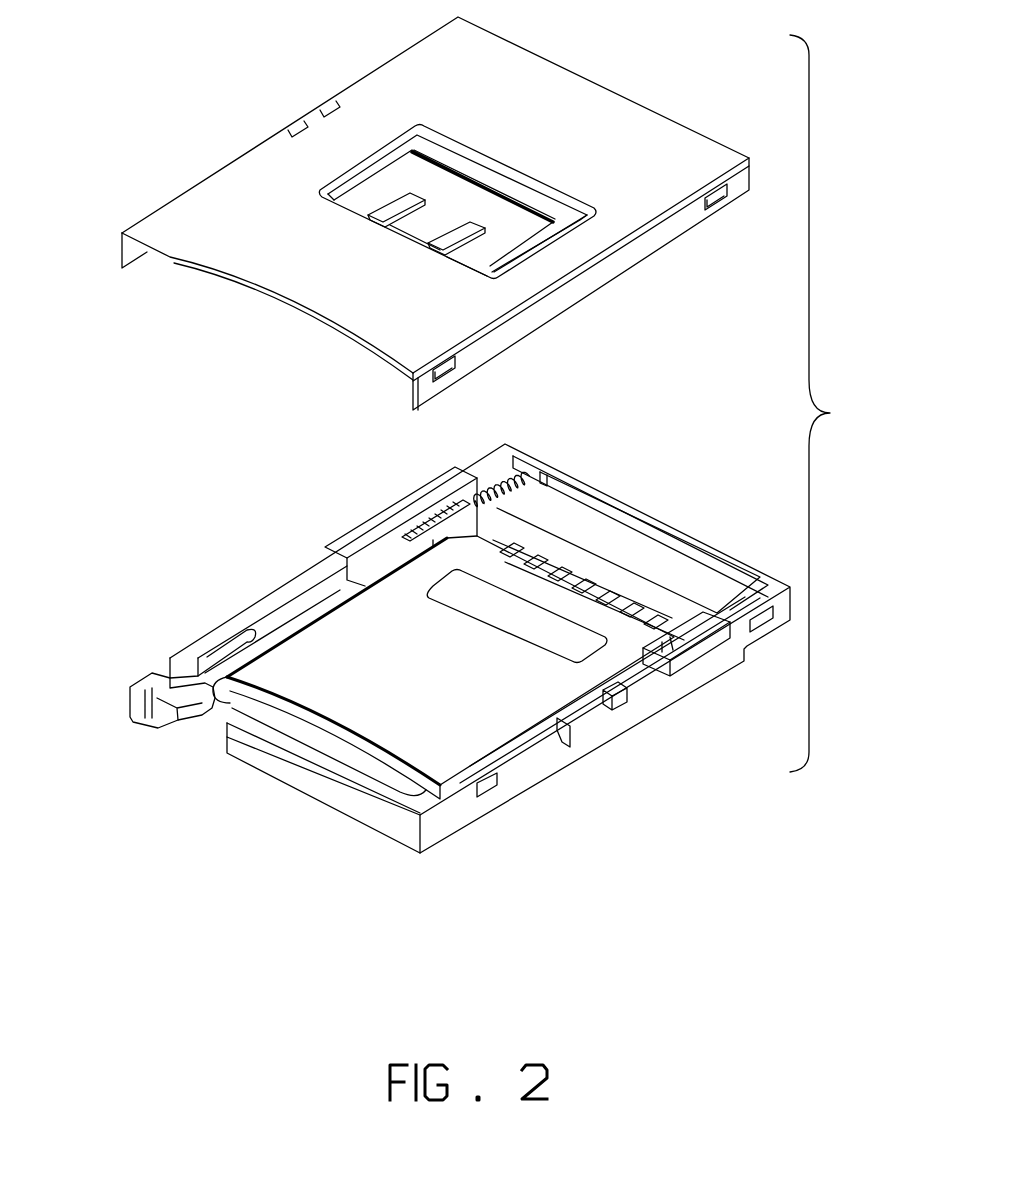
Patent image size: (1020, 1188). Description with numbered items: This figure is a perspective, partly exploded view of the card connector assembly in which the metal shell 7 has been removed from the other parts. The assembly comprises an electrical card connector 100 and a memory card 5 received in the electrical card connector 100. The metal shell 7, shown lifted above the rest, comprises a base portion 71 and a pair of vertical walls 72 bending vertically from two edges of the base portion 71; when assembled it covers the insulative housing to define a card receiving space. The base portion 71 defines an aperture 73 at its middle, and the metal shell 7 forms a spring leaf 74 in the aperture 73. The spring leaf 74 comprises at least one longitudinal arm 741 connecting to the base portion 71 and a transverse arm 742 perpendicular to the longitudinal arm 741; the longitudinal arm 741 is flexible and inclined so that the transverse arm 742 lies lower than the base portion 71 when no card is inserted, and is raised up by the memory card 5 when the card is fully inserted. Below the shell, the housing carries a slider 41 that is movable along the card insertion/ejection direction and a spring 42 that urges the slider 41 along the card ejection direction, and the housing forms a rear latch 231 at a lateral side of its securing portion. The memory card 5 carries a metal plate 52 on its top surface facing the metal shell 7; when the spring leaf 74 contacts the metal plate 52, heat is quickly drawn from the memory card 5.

The electrical card connector 100 is at (841, 403).
The metal shell 7 is at (435, 213).
The base portion 71 is at (558, 100).
The vertical walls 72 is at (633, 250).
The aperture 73 is at (390, 152).
The spring leaf 74 is at (532, 276).
The longitudinal arm 741 is at (488, 243).
The transverse arm 742 is at (528, 228).
The slider 41 is at (377, 553).
The spring 42 is at (473, 493).
The rear latch 231 is at (193, 693).
The memory card 5 is at (398, 718).
The metal plate 52 is at (565, 640).